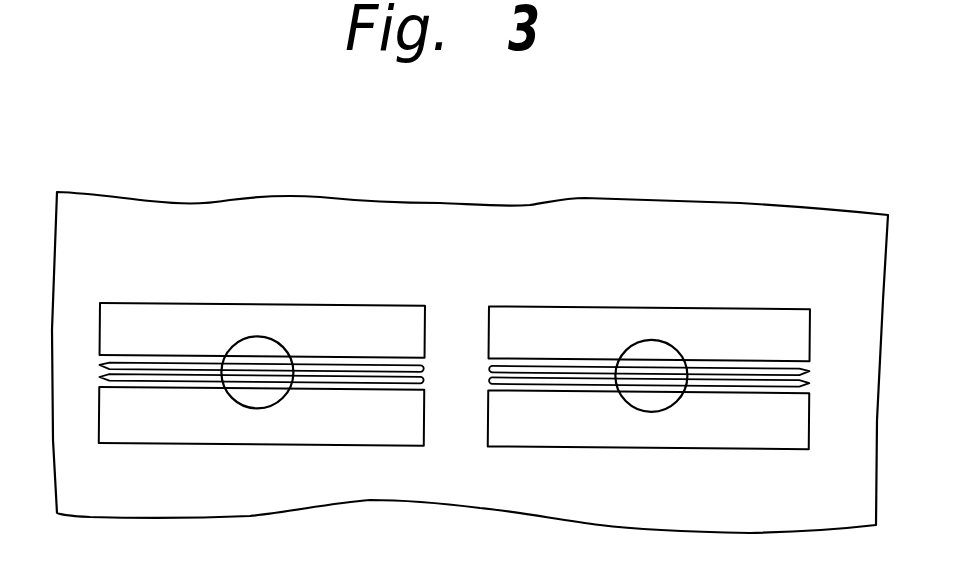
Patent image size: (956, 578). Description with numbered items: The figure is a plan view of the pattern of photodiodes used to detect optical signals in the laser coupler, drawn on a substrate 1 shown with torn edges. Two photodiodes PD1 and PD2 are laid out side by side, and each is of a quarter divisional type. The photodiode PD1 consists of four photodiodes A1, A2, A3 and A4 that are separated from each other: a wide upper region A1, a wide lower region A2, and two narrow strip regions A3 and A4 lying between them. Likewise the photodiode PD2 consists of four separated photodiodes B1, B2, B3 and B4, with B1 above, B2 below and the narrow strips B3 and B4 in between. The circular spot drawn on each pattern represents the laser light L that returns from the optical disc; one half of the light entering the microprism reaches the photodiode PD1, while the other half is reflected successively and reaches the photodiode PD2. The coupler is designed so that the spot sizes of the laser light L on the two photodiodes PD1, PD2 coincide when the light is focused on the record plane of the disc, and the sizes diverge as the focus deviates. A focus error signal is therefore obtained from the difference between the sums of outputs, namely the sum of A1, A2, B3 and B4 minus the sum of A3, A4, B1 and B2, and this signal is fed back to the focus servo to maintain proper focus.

The substrate / semiconductor sheet 1 is at (573, 197).
The photodiode PD1 is at (660, 290).
The photodiode PD2 is at (255, 284).
The photodiode A1 is at (798, 330).
The photodiode A2 is at (800, 427).
The photodiode A3 is at (812, 372).
The photodiode A4 is at (810, 383).
The photodiode B1 is at (110, 312).
The photodiode B2 is at (118, 432).
The photodiode B3 is at (100, 364).
The photodiode B4 is at (100, 378).
The laser light L is at (252, 410).